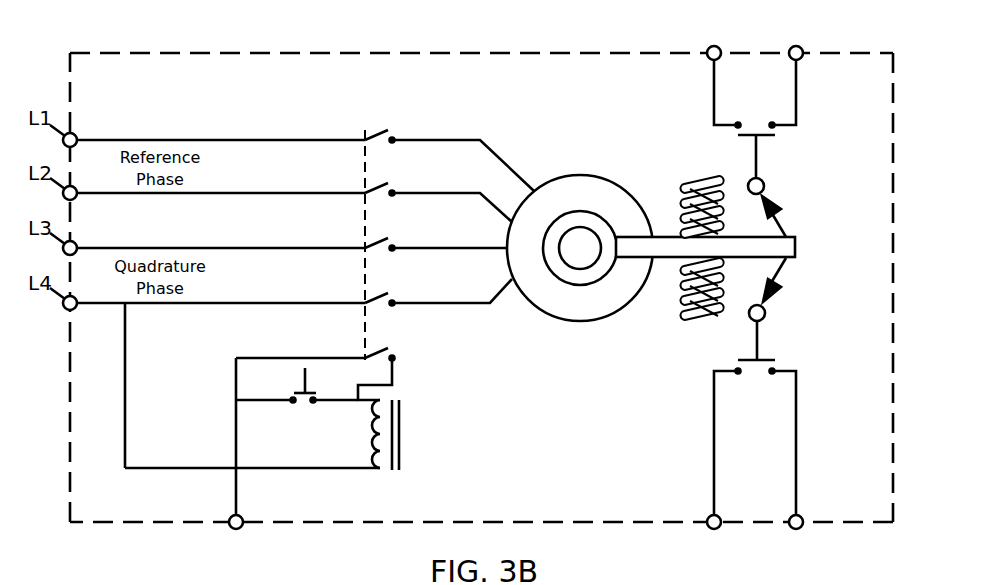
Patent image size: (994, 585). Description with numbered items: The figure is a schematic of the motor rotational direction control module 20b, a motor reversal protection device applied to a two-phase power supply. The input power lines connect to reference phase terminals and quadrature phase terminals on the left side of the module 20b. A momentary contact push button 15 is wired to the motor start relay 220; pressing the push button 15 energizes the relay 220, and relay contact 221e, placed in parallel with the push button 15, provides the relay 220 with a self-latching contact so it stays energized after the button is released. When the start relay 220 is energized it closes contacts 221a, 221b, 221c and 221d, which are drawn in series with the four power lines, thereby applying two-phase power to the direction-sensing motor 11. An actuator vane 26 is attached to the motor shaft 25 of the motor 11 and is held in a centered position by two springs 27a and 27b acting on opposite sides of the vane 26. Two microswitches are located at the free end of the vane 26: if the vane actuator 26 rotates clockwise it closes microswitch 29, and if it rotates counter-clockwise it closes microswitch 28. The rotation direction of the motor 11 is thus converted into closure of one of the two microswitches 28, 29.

The motor rotational direction control module 20b is at (109, 52).
The relay contact 221a is at (352, 136).
The relay contact 221b is at (352, 190).
The relay contact 221c is at (352, 245).
The relay contact 221d is at (352, 300).
The relay contact 221e is at (352, 355).
The two-phase direction-sensing motor 11 is at (581, 176).
The motor shaft 25 is at (580, 254).
The actuator vane 26 is at (673, 236).
The spring 27a is at (702, 178).
The spring 27b is at (700, 318).
The microswitch 28 is at (758, 167).
The microswitch 29 is at (760, 337).
The momentary contact push button 15 is at (300, 381).
The motor start relay 220 is at (403, 443).